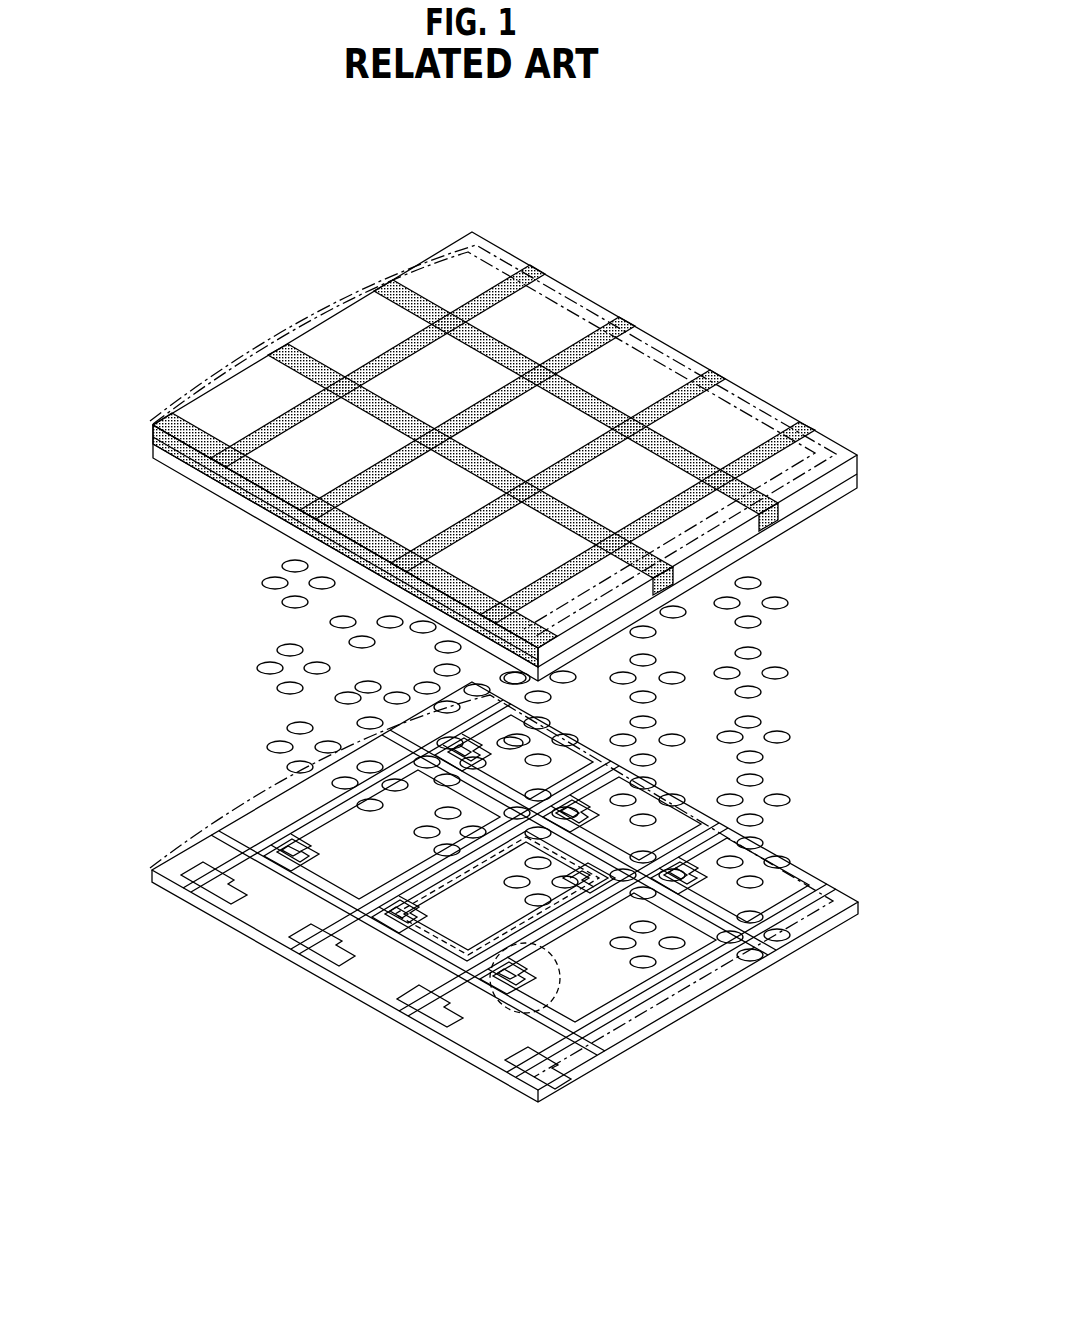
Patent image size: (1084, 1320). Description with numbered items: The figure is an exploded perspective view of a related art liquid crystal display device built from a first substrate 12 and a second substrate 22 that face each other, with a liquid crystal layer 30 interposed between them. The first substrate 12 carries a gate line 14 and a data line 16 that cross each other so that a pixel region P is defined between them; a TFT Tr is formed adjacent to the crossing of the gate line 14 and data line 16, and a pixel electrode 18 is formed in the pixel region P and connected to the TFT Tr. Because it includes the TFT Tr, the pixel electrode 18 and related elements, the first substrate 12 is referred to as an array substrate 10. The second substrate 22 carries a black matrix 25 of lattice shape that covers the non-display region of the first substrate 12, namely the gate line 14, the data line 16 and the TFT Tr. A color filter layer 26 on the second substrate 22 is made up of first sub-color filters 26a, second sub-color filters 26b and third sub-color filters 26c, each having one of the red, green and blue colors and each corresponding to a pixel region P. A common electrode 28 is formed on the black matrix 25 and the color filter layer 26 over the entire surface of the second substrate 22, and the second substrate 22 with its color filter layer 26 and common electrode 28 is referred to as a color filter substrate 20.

The array substrate 10 is at (237, 789).
The first substrate 12 is at (523, 1090).
The gate line 14 is at (612, 1053).
The data line 16 is at (620, 1010).
The pixel electrode 18 is at (678, 990).
The pixel region P is at (410, 950).
The TFT Tr is at (492, 990).
The color filter substrate 20 is at (262, 292).
The second substrate 22 is at (150, 432).
The black matrix 25 is at (722, 383).
The color filter layer 26 is at (484, 348).
The first sub-color filter 26a is at (488, 250).
The second sub-color filter 26b is at (568, 300).
The third sub-color filter 26c is at (658, 360).
The common electrode 28 is at (152, 458).
The liquid crystal layer 30 is at (790, 735).